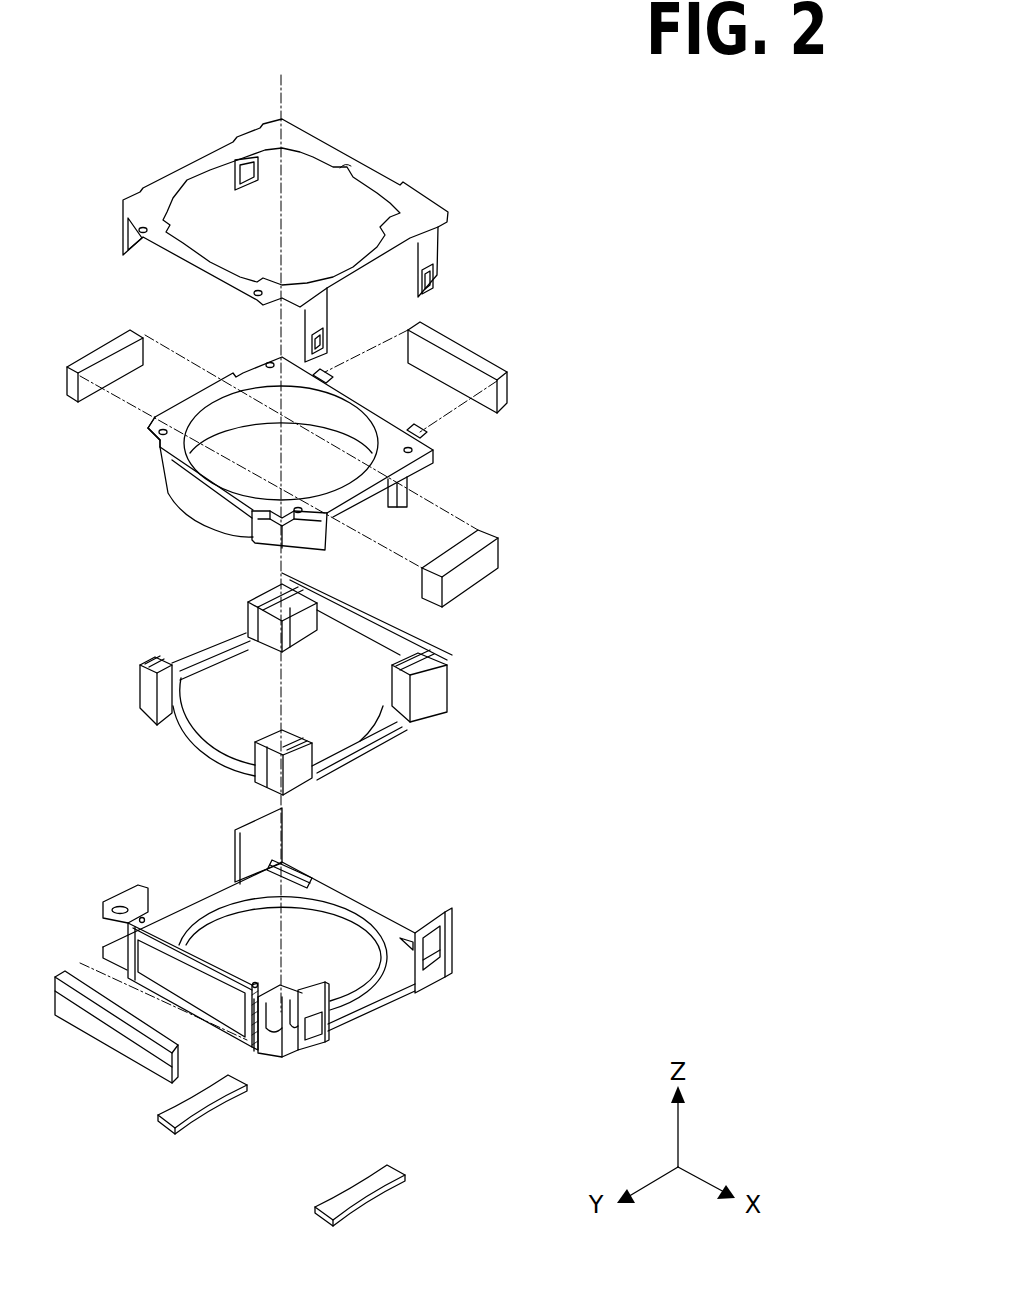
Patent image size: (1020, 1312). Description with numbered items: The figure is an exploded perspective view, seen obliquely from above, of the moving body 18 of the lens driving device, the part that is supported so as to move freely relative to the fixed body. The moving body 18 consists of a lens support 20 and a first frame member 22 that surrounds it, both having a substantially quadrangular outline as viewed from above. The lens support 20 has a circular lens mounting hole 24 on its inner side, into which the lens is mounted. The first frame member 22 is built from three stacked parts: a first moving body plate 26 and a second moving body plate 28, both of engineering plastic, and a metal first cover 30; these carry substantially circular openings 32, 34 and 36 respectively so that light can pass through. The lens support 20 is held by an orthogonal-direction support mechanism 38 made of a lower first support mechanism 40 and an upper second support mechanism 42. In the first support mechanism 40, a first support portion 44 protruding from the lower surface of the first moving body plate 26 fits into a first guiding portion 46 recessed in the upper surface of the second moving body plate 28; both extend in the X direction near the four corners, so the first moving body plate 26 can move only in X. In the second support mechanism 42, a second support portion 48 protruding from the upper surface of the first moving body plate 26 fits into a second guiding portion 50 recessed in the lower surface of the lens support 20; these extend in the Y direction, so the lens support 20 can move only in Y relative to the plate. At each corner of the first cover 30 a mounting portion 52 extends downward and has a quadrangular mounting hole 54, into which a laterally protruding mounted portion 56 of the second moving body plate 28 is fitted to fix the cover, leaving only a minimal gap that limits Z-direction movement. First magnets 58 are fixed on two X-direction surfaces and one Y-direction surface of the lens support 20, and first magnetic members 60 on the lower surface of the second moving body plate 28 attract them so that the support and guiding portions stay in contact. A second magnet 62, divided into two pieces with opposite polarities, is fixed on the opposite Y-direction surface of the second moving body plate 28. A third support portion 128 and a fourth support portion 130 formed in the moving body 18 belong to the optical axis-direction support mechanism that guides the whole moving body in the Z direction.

The moving body 18 is at (607, 270).
The lens support 20 is at (245, 466).
The first frame member 22 is at (313, 221).
The lens mounting hole 24 is at (213, 425).
The first moving body plate 26 is at (187, 740).
The second moving body plate 28 is at (293, 984).
The first cover 30 is at (170, 180).
The opening 32 is at (220, 748).
The opening 34 is at (367, 990).
The opening 36 is at (343, 168).
The orthogonal-direction support mechanism 38 is at (282, 841).
The first support mechanism 40 is at (312, 870).
The second support mechanism 42 is at (136, 430).
The first support portion 44 is at (305, 696).
The first guiding portion 46 is at (272, 870).
The second support portion 48 is at (262, 597).
The second guiding portion 50 is at (152, 442).
The mounting portion 52 is at (431, 243).
The mounting hole 54 is at (437, 277).
The mounted portion 56 is at (436, 966).
The first magnet 58 is at (100, 346).
The first magnetic member 60 is at (183, 1113).
The second magnet 62 is at (102, 1038).
The third support portion 128 is at (107, 912).
The fourth support portion 130 is at (280, 1042).